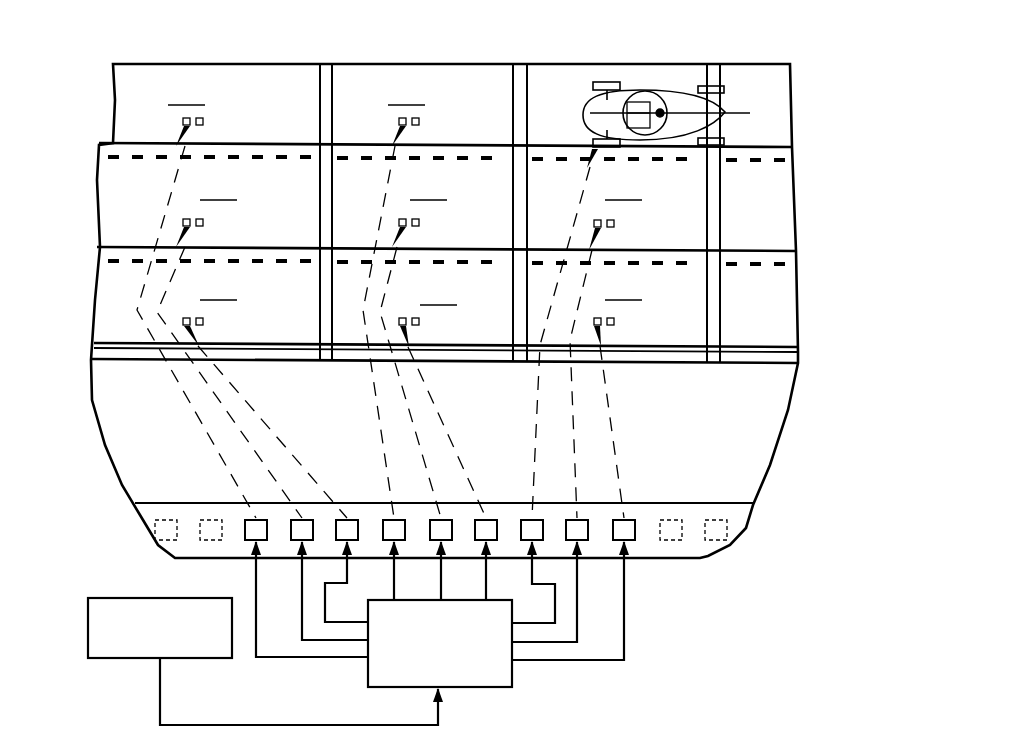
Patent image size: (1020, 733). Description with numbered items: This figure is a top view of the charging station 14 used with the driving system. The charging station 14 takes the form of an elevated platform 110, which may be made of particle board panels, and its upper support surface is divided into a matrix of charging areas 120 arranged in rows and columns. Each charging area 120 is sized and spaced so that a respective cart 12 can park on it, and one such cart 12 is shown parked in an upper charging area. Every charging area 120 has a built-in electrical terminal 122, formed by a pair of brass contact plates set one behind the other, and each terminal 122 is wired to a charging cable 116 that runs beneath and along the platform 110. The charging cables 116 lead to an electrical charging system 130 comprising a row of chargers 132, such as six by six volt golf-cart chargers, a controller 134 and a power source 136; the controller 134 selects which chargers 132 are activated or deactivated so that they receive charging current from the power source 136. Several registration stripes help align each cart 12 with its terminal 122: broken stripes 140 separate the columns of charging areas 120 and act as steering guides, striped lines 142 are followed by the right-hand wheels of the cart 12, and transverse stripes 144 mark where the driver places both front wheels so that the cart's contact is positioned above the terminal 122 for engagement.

The charging station 14 is at (458, 38).
The cart 12 is at (661, 84).
The platform 110 is at (266, 77).
The charging cables 116 is at (246, 399).
The charging areas 120 is at (405, 193).
The electrical terminal 122 is at (214, 121).
The electrical charging system 130 is at (641, 600).
The chargers 132 is at (345, 519).
The controller 134 is at (470, 678).
The power source 136 is at (188, 660).
The broken stripes 140 is at (762, 163).
The striped lines 142 is at (763, 146).
The transverse stripes 144 is at (333, 70).